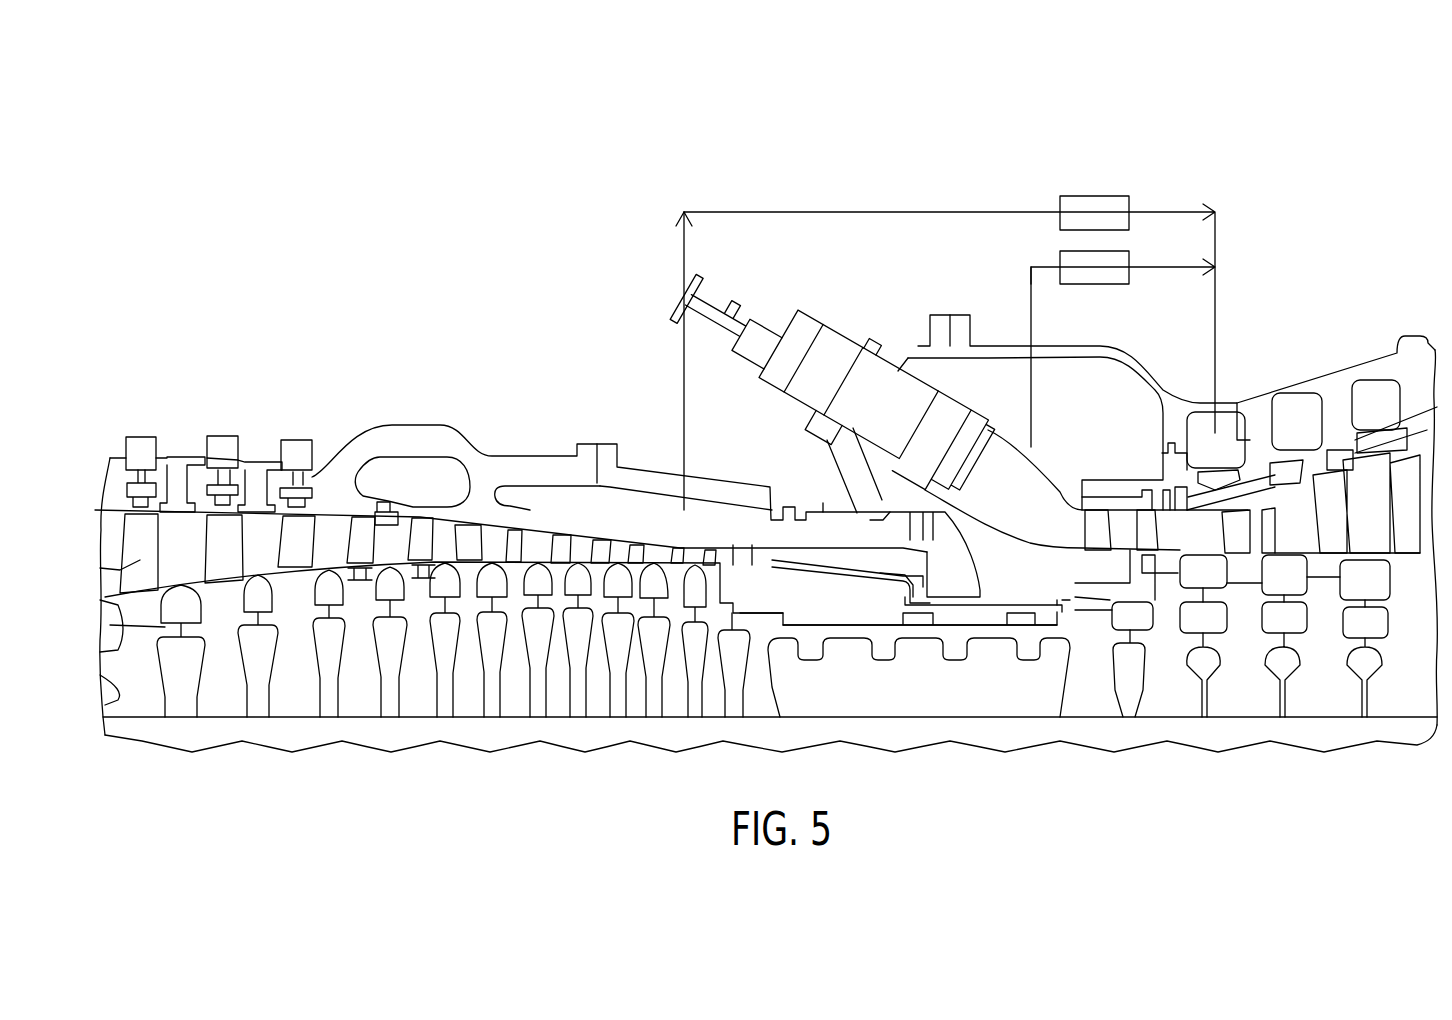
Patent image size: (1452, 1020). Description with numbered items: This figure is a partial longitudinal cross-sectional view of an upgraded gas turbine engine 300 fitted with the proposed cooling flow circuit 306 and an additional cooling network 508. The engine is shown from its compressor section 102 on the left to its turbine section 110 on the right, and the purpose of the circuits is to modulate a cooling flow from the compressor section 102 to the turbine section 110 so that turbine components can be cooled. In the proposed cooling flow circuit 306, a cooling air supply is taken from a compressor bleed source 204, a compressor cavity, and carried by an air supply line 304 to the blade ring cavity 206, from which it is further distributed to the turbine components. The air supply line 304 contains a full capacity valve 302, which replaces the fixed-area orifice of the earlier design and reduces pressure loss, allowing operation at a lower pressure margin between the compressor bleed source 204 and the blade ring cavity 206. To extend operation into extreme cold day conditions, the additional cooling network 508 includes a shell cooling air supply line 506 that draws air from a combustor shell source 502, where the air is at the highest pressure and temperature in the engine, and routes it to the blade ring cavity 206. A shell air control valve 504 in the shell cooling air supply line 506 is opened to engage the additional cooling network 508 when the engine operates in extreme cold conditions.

The compressor section 102 is at (596, 418).
The turbine section 110 is at (1318, 350).
The compressor bleed source 204 is at (700, 513).
The blade ring cavity 206 is at (1230, 433).
The upgraded gas turbine engine 300 is at (1265, 158).
The full capacity valve 302 is at (1092, 196).
The air supply line 304 is at (900, 212).
The proposed cooling flow circuit 306 is at (823, 183).
The combustor shell source 502 is at (987, 378).
The shell air control valve 504 is at (1090, 268).
The shell cooling air supply line 506 is at (1031, 395).
The additional cooling network 508 is at (1050, 257).